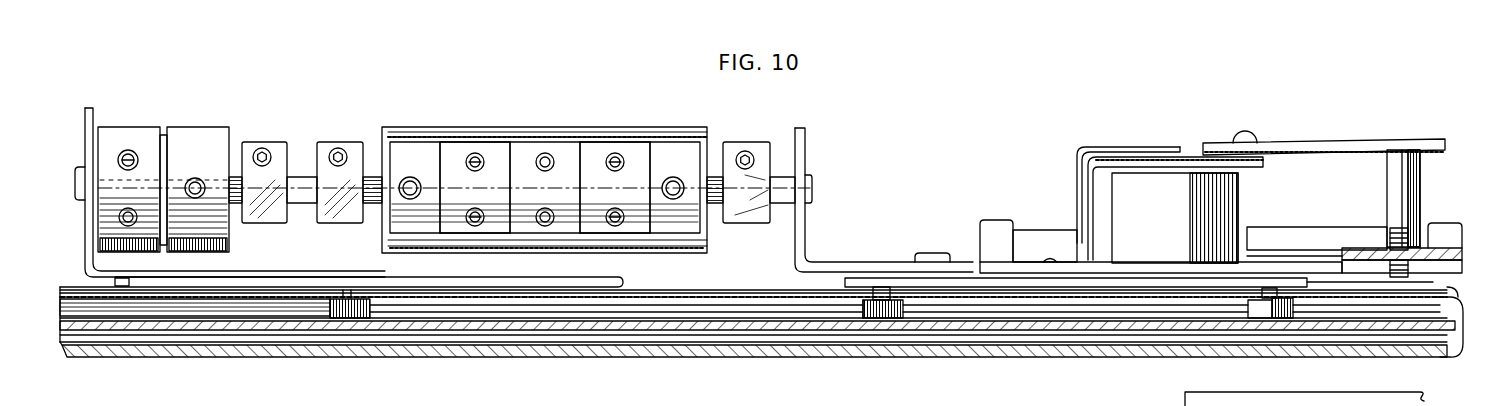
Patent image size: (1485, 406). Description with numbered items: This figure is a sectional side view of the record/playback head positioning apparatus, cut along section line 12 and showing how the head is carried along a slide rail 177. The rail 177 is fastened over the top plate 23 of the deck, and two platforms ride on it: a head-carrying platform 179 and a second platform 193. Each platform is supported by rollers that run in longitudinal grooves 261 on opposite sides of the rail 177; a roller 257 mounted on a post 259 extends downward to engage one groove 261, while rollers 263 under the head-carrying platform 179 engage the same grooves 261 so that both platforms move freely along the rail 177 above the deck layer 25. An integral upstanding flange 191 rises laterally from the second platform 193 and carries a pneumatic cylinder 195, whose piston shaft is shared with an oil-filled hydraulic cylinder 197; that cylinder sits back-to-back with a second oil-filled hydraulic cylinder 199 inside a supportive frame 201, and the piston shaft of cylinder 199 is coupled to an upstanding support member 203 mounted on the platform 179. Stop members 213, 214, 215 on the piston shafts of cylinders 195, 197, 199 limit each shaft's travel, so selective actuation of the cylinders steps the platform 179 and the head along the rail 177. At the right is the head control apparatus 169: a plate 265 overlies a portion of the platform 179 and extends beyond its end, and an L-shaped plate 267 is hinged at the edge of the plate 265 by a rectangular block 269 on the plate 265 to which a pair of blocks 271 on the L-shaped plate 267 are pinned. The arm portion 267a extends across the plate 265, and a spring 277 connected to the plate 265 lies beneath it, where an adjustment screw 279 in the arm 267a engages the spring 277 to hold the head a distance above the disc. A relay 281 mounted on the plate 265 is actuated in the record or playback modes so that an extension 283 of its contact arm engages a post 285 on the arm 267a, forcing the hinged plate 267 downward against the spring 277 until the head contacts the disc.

The section line 12- 12 is at (525, 158).
The top plate 23 is at (833, 326).
The lower rail 25 is at (740, 349).
The head control apparatus 169 is at (1142, 122).
The rail 177 is at (1427, 266).
The platform 179 is at (988, 291).
The upstanding flange 191 is at (93, 109).
The second platform 193 is at (250, 283).
The pneumatic cylinder 195 is at (167, 143).
The oil-filled hydraulic cylinder 197 is at (492, 152).
The oil-filled hydraulic cylinder 199 is at (628, 152).
The supportive frame 201 is at (535, 132).
The upstanding support member 203 is at (800, 137).
The stop member 213 is at (248, 147).
The stop member 214 is at (327, 147).
The stop member 215 is at (740, 142).
The roller 257 is at (358, 314).
The post 259 is at (347, 295).
The longitudinal groove 261 is at (308, 298).
The roller 263 is at (1253, 310).
The plate 265 is at (880, 273).
The L-shaped plate 267 is at (1267, 261).
The arm portion 267a is at (1427, 262).
The rectangular block 269 is at (1040, 233).
The block 271 is at (987, 233).
The spring 277 is at (1317, 229).
The adjustment screw 279 is at (1390, 242).
The relay 281 is at (1178, 187).
The extension 283 is at (1357, 143).
The post 285 is at (1418, 180).